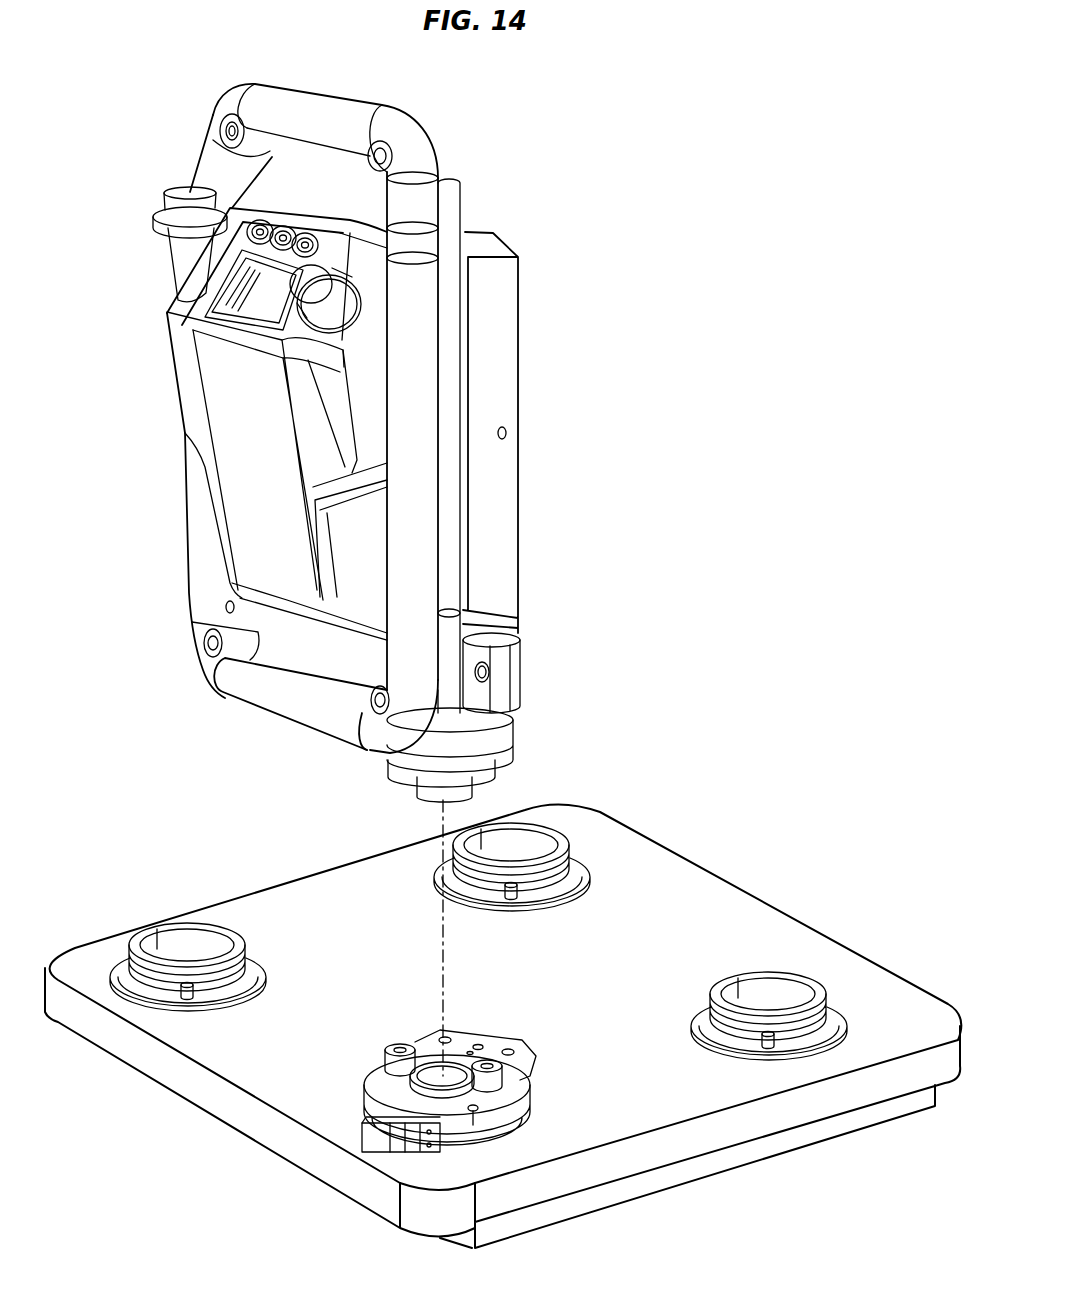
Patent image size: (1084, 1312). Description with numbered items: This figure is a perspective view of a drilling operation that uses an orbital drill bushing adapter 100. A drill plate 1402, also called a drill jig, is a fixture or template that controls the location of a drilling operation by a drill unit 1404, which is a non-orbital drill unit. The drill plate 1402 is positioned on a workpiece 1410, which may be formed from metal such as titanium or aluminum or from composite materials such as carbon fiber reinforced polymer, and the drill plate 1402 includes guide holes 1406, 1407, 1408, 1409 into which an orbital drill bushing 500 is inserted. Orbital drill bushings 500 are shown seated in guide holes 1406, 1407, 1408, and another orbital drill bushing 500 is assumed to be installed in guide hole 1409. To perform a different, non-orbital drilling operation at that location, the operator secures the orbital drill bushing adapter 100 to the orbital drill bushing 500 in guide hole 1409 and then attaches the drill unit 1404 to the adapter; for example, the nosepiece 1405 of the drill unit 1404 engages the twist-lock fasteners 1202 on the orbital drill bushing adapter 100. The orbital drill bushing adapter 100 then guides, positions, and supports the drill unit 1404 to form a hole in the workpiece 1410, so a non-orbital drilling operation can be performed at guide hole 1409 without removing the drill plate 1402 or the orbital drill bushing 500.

The orbital drill bushing adapter 100 is at (457, 1072).
The orbital drill bushing 500 is at (140, 938).
The twist-lock fasteners 1202 is at (385, 1060).
The drill plate 1402 is at (783, 910).
The drill unit 1404 is at (380, 443).
The nosepiece 1405 is at (503, 742).
The guide hole 1406 is at (263, 963).
The guide hole 1407 is at (590, 860).
The guide hole 1408 is at (847, 1010).
The guide hole 1409 is at (517, 1135).
The workpiece 1410 is at (733, 1178).